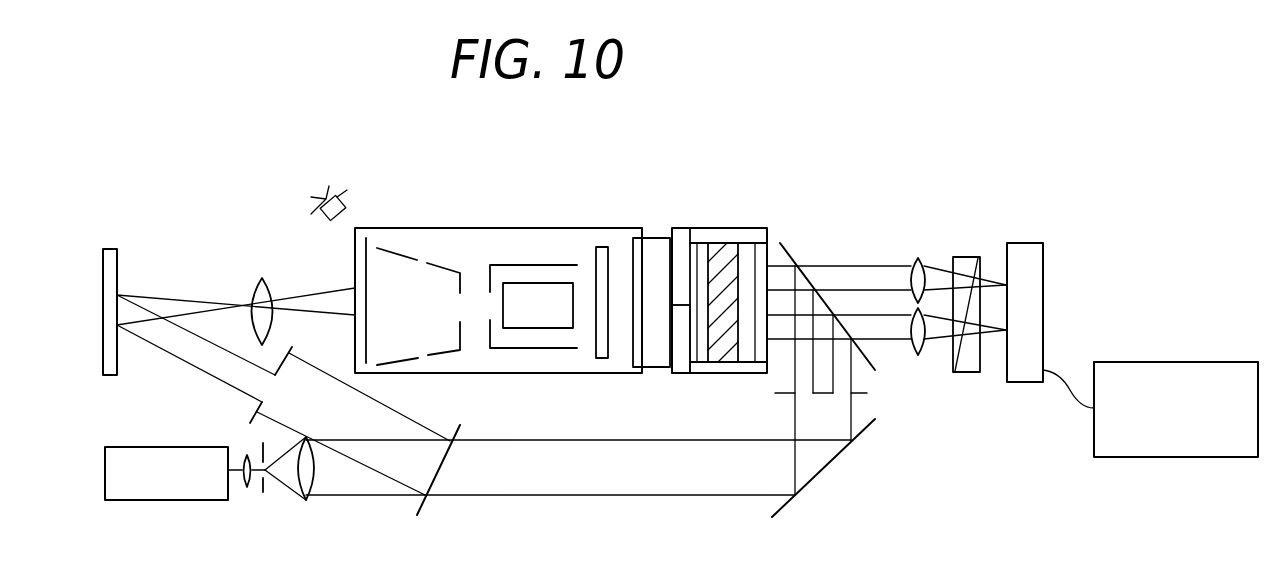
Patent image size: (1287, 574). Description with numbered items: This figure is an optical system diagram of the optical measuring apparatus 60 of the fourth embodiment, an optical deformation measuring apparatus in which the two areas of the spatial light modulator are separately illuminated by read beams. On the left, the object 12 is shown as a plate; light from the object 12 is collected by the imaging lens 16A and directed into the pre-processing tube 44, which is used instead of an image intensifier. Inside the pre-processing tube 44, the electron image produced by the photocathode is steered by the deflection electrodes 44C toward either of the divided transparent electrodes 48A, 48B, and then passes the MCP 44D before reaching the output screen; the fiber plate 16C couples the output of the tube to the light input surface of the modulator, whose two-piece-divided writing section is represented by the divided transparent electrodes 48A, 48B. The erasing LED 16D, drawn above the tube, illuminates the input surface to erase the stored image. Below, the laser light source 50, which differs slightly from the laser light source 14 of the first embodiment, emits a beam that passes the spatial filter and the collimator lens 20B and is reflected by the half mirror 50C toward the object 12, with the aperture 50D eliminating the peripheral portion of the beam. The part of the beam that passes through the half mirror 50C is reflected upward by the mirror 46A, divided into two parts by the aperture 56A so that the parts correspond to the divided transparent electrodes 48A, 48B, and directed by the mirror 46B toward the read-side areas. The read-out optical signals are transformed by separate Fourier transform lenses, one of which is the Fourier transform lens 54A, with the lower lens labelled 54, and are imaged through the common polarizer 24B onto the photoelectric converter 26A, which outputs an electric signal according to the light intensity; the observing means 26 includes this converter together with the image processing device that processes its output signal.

The object 12 is at (112, 249).
The laser light source 14 is at (130, 503).
The imaging lens 16A is at (268, 280).
The fiber plate 16C is at (657, 238).
The erasing LED 16D is at (348, 199).
The collimator lens 20B is at (317, 483).
The polarizer 24B is at (968, 257).
The observing means 26 is at (1215, 362).
The photoelectric converter 26A is at (1023, 243).
The pre-processing tube 44 is at (524, 212).
The deflection electrodes 44C is at (547, 328).
The MCP 44D is at (601, 247).
The mirror 46A is at (827, 467).
The mirror 46B is at (788, 243).
The divided transparent electrode 48A is at (687, 250).
The divided transparent electrode 48B is at (682, 355).
The laser light source 50 is at (195, 515).
The half mirror 50C is at (428, 498).
The aperture 50D is at (247, 410).
The lens 54 is at (922, 355).
The Fourier transform lens 54A is at (921, 258).
The aperture 56A is at (867, 393).
The optical measuring apparatus 60 is at (251, 196).